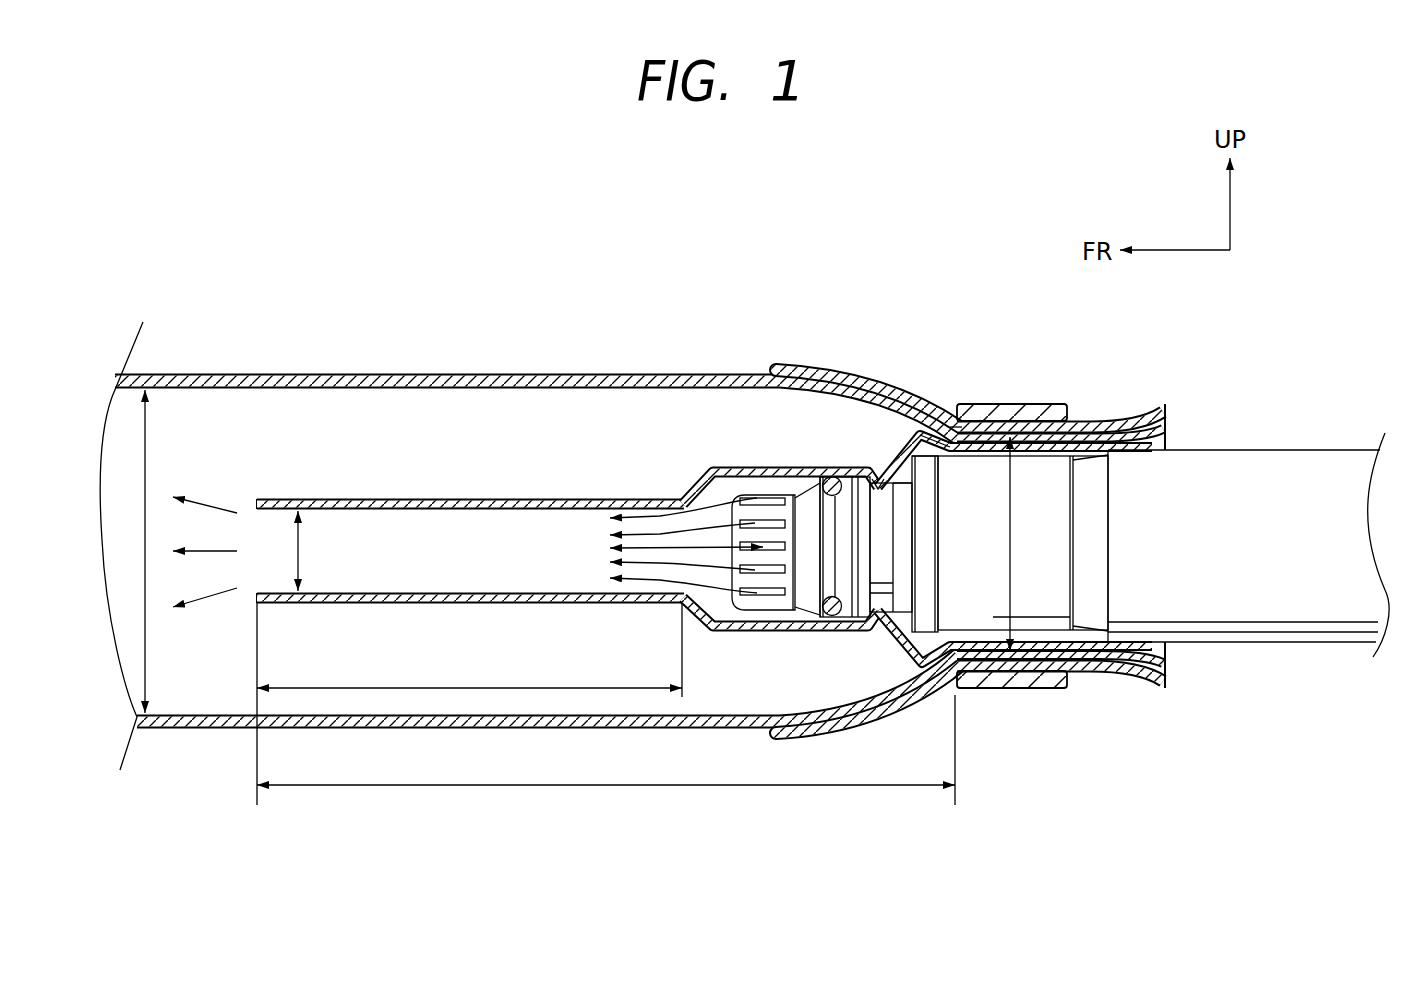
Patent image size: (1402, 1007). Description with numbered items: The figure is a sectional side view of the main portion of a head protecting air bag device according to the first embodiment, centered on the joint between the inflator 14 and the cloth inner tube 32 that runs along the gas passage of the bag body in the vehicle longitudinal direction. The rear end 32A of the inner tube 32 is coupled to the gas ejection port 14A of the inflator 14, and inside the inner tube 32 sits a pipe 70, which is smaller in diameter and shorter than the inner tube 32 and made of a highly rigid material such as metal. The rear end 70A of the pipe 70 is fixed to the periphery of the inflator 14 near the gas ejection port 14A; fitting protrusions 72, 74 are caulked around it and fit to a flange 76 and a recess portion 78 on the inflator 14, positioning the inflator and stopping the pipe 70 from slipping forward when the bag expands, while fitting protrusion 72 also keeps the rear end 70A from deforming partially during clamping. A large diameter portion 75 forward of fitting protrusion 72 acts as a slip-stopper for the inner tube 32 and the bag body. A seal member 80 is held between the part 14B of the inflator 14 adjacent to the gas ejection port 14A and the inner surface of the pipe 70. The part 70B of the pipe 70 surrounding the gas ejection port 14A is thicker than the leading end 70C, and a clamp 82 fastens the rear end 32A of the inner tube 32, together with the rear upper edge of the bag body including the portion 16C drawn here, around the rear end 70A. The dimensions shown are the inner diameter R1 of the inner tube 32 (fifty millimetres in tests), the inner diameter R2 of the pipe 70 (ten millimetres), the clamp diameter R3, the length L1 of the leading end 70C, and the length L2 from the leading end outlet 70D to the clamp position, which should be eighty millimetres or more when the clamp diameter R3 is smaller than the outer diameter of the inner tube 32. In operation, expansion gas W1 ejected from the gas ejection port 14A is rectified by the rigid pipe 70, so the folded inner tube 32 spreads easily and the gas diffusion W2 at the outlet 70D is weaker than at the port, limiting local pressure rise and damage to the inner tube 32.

The inflator 14 is at (1043, 541).
The gas ejection port 14A is at (736, 548).
The part of the inflator adjacent to the gas ejection port 14B is at (830, 556).
The filler neck attachment portion 16C is at (804, 368).
The inner tube 32 is at (318, 372).
The rear end of the inner tube 32A is at (1117, 413).
The pipe 70 is at (723, 474).
The rear end of the pipe 70A is at (1077, 455).
The part of the pipe at the peripheral portion of the gas ejection port 70B is at (750, 466).
The leading end of the pipe 70C is at (468, 498).
The leading end outlet of the pipe 70D is at (247, 516).
The fitting protrusion 72 is at (935, 441).
The fitting protrusion 74 is at (900, 486).
The large diameter portion 75 is at (926, 474).
The flange 76 is at (959, 428).
The recess portion 78 is at (876, 483).
The seal member 80 is at (826, 475).
The clamp 82 is at (1033, 404).
The inner diameter of the inner tube R1 is at (150, 416).
The inner diameter of the pipe R2 is at (300, 552).
The clamp diameter R3 is at (1012, 516).
The length of the leading end of the pipe L1 is at (462, 686).
The length from the leading end outlet to the clamp position L2 is at (598, 784).
The arrow indicating expansion gas W1 is at (662, 520).
The arrow indicating diffusion of expansion gas W2 is at (207, 551).